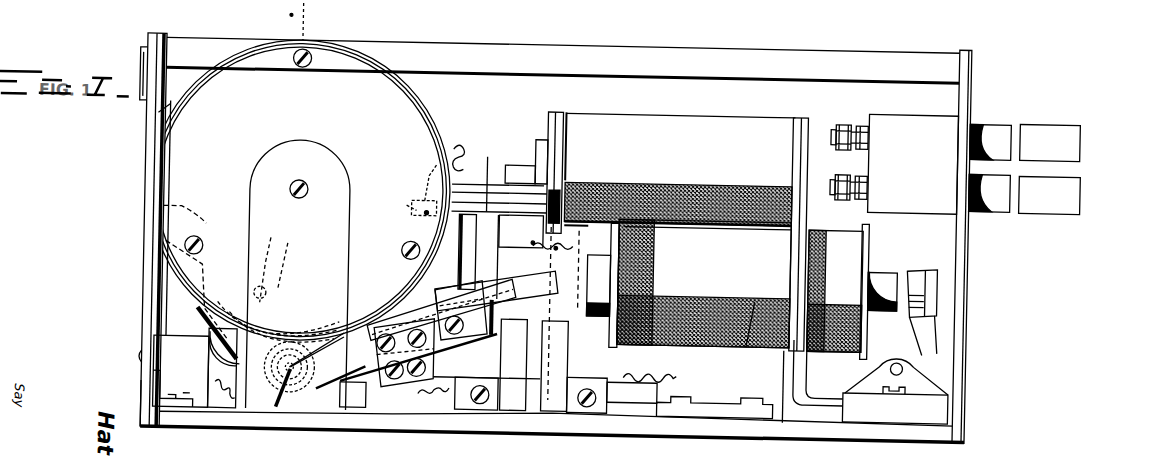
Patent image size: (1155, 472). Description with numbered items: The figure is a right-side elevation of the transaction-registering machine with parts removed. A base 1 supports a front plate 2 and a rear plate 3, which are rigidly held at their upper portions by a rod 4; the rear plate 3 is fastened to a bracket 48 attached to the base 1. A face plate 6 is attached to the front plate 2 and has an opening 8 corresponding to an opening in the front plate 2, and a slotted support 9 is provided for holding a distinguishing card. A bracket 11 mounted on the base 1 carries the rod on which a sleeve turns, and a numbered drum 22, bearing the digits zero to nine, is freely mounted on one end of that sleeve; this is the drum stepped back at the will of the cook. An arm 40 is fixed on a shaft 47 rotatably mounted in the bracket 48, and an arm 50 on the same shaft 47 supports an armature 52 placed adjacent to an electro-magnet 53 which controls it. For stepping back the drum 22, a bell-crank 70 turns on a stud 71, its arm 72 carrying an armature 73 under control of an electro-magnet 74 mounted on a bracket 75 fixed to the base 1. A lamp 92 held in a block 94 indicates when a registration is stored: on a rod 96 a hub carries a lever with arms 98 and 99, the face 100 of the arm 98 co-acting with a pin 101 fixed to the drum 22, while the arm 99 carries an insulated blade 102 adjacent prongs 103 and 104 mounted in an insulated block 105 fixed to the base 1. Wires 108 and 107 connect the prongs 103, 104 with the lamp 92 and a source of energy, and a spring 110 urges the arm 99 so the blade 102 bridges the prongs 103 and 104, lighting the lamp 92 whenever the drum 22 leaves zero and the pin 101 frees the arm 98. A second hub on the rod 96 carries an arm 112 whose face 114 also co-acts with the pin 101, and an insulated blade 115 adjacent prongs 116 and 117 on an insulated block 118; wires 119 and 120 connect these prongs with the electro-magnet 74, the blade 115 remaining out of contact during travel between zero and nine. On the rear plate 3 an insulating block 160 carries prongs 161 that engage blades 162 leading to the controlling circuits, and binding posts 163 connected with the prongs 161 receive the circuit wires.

The base 1 is at (852, 419).
The front plate 2 is at (150, 384).
The rear plate 3 is at (960, 281).
The rod 4 is at (493, 42).
The face plate 6 is at (148, 245).
The opening 8 is at (297, 21).
The slotted support 9 is at (142, 56).
The bracket 11 is at (262, 174).
The drum 22 is at (172, 103).
The arm 40 is at (778, 367).
The shaft 47 is at (910, 353).
The bracket 48 is at (930, 389).
The arm 50 is at (408, 203).
The armature 52 is at (922, 256).
The electro-magnet 53 is at (746, 342).
The bell-crank 70 is at (473, 187).
The stud 71 is at (525, 157).
The arm 72 is at (537, 185).
The armature 73 is at (567, 117).
The electro-magnet 74 is at (735, 108).
The bracket 75 is at (805, 137).
The lamp 92 is at (140, 356).
The block 94 is at (195, 367).
The rod 96 is at (296, 364).
The arm 98 is at (215, 330).
The arm 99 is at (352, 379).
The face 100 is at (278, 300).
The pin 101 is at (298, 274).
The blade 102 is at (462, 394).
The prong 103 is at (525, 382).
The prong 104 is at (556, 397).
The block 105 is at (545, 402).
The wire 107 is at (671, 368).
The wire 108 is at (388, 368).
The spring 110 is at (327, 372).
The arm 112 is at (222, 326).
The face 114 is at (138, 209).
The blade 115 is at (410, 295).
The prong 116 is at (432, 220).
The prong 117 is at (492, 213).
The insulated block 118 is at (560, 292).
The wire 119 is at (440, 152).
The wire 120 is at (583, 221).
The block 160 is at (940, 124).
The prongs 161 is at (990, 170).
The blades 162 is at (1073, 170).
The binding posts 163 is at (887, 115).